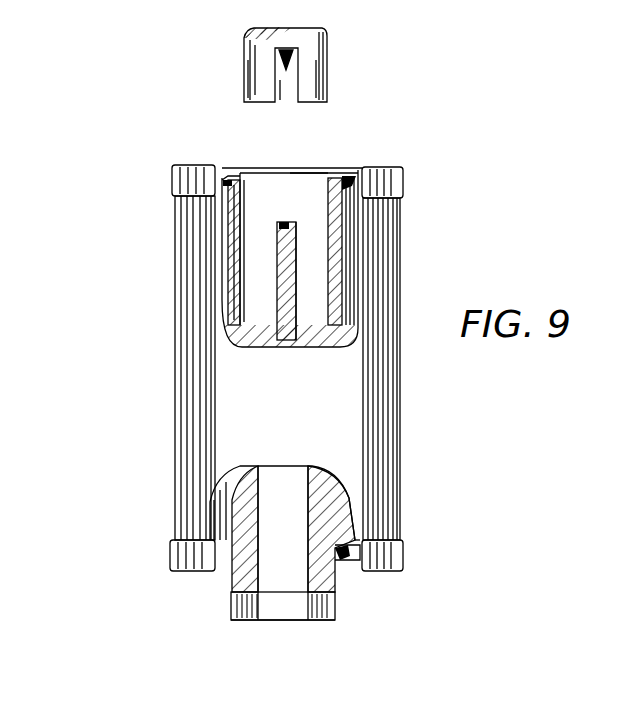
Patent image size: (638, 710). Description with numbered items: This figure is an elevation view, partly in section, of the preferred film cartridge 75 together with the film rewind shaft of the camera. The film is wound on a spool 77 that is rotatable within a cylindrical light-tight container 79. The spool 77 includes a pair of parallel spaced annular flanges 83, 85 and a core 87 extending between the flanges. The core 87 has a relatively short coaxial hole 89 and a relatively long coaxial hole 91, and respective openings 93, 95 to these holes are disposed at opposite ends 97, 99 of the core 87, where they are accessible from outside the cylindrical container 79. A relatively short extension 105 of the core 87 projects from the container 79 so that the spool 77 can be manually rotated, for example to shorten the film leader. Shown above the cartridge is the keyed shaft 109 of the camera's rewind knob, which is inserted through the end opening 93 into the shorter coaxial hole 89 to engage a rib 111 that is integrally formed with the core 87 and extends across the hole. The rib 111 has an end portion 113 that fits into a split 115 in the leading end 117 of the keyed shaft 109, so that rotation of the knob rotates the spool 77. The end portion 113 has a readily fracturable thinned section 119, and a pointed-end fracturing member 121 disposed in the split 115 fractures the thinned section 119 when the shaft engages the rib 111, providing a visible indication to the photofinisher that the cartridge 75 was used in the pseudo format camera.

The film cartridge 75 is at (258, 403).
The spool 77 is at (275, 336).
The cylindrical light-tight container 79 is at (400, 452).
The annular flange 83 is at (346, 180).
The annular flange 85 is at (340, 552).
The core 87 is at (258, 258).
The shorter coaxial hole 89 is at (258, 188).
The longer coaxial hole 91 is at (275, 505).
The end opening 93 is at (286, 172).
The end opening 95 is at (290, 622).
The end of the core 97 is at (388, 166).
The end of the core 99 is at (382, 574).
The short extension 105 is at (232, 596).
The keyed shaft 109 is at (328, 44).
The rib 111 is at (258, 288).
The end portion of the rib 113 is at (287, 220).
The split 115 is at (282, 96).
The leading end of the keyed shaft 117 is at (310, 105).
The thinned section 119 is at (278, 232).
The pointed-end fracturing member 121 is at (287, 62).